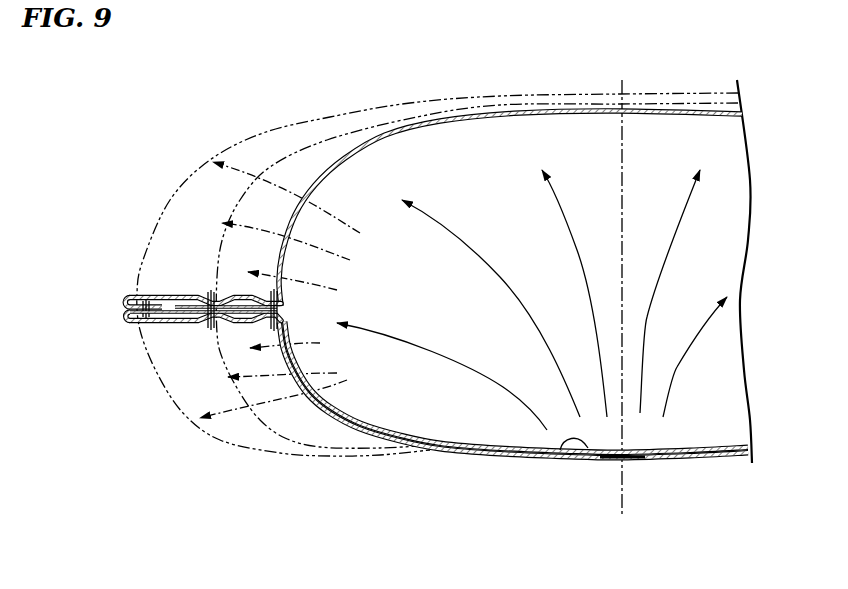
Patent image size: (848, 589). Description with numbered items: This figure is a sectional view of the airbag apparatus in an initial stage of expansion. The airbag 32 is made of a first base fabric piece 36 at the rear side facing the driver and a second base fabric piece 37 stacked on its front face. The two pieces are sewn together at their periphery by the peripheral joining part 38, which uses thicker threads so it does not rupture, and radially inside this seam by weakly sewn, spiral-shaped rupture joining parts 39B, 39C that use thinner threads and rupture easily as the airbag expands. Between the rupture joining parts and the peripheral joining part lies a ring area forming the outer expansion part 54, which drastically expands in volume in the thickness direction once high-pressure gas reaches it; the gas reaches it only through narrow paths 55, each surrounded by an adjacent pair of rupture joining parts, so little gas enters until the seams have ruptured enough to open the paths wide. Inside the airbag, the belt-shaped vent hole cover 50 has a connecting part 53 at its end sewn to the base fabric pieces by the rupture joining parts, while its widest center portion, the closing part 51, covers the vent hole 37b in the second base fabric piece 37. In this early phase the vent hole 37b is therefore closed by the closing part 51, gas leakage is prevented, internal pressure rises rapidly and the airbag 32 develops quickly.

The airbag 32 is at (380, 124).
The first base fabric piece 36 is at (336, 166).
The second base fabric piece 37 is at (345, 420).
The vent hole 37b is at (603, 460).
The peripheral joining part 38 is at (148, 296).
The rupture joining part 39B is at (207, 333).
The rupture joining part 39C is at (271, 298).
The vent hole cover 50 is at (341, 392).
The closing part 51 is at (560, 450).
The connecting part 53 is at (188, 296).
The outer expansion part 54 is at (167, 320).
The path 55 is at (240, 321).